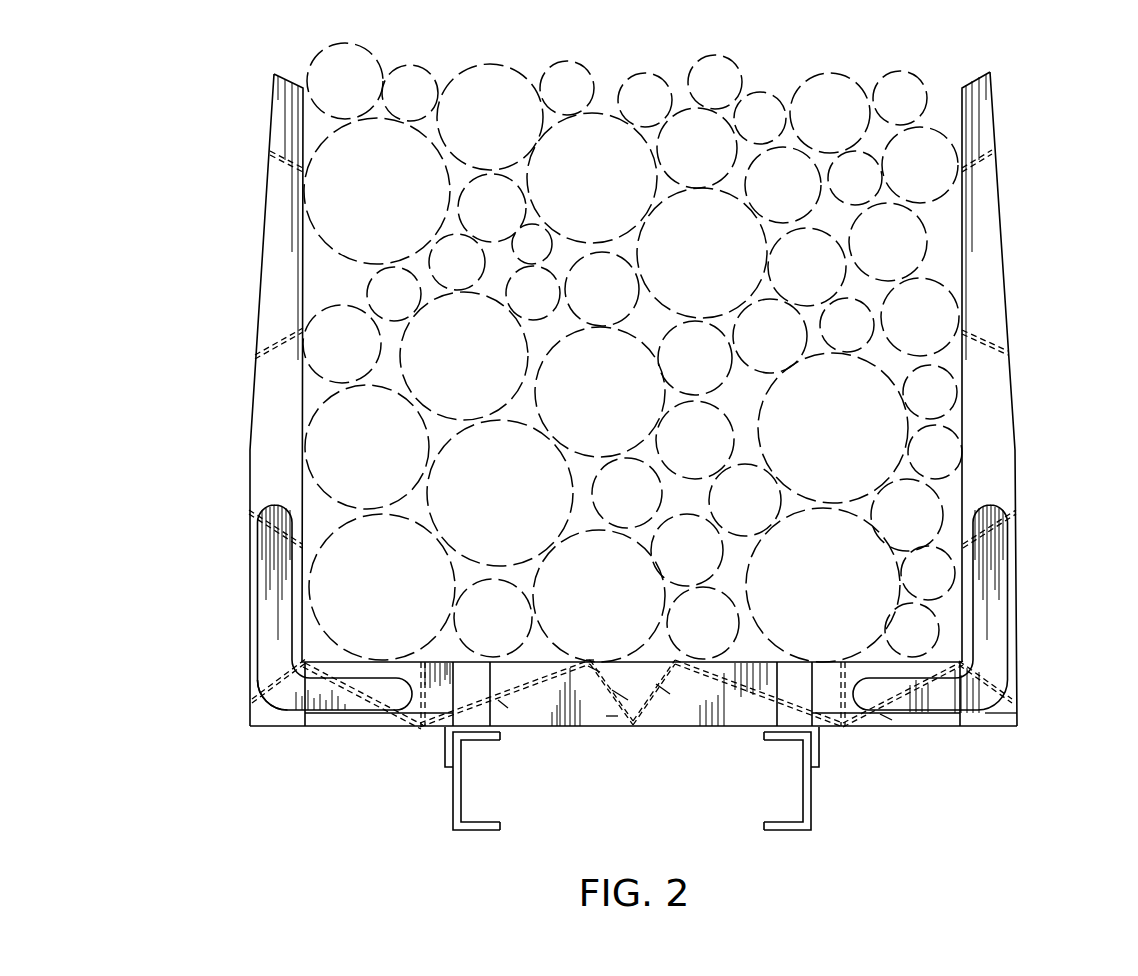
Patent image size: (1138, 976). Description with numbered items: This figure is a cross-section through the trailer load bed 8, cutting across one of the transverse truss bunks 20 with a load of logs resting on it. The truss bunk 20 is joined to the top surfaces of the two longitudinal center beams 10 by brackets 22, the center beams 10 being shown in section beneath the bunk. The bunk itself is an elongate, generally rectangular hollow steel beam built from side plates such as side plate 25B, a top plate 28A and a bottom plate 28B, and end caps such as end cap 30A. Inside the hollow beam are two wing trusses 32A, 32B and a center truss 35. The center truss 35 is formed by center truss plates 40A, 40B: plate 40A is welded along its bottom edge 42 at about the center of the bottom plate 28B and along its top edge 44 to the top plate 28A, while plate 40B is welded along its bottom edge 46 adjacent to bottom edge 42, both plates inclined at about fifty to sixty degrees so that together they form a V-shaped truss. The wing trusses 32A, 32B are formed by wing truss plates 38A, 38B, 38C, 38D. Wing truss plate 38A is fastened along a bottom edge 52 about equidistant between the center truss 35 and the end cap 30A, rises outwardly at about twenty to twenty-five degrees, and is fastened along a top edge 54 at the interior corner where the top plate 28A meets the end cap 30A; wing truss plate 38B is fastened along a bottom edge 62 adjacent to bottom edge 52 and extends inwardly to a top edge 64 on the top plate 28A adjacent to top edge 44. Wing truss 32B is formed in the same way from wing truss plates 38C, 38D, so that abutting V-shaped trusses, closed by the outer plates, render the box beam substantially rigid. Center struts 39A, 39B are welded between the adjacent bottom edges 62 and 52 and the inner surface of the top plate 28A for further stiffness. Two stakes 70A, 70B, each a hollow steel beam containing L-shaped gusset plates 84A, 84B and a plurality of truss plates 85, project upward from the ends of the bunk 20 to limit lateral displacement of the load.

The load bed 8 is at (262, 730).
The center beam 10 is at (468, 832).
The truss bunk 20 is at (320, 728).
The bracket 22 is at (827, 762).
The side plate 25B is at (765, 735).
The top plate 28A is at (962, 648).
The bottom plate 28B is at (995, 728).
The end cap 30A is at (293, 723).
The wing truss 32A is at (507, 702).
The wing truss 32B is at (887, 718).
The center truss 35 is at (612, 728).
The wing truss plate 38A is at (328, 715).
The wing truss plate 38B is at (548, 712).
The wing truss plate 38C is at (743, 683).
The wing truss plate 38D is at (943, 714).
The center strut 39A is at (433, 728).
The center strut 39B is at (867, 724).
The center truss plate 40A is at (623, 693).
The center truss plate 40B is at (663, 690).
The bottom edge 42 is at (634, 728).
The top edge 44 is at (590, 662).
The bottom edge 46 is at (626, 727).
The bottom edge 52 is at (417, 728).
The top edge 54 is at (300, 632).
The bottom edge 62 is at (422, 728).
The top edge 64 is at (593, 668).
The stake 70A is at (284, 128).
The stake 70B is at (975, 110).
The L-shaped gusset plate 84A is at (273, 557).
The L-shaped gusset plate 84B is at (997, 562).
The truss plate 85 is at (280, 337).